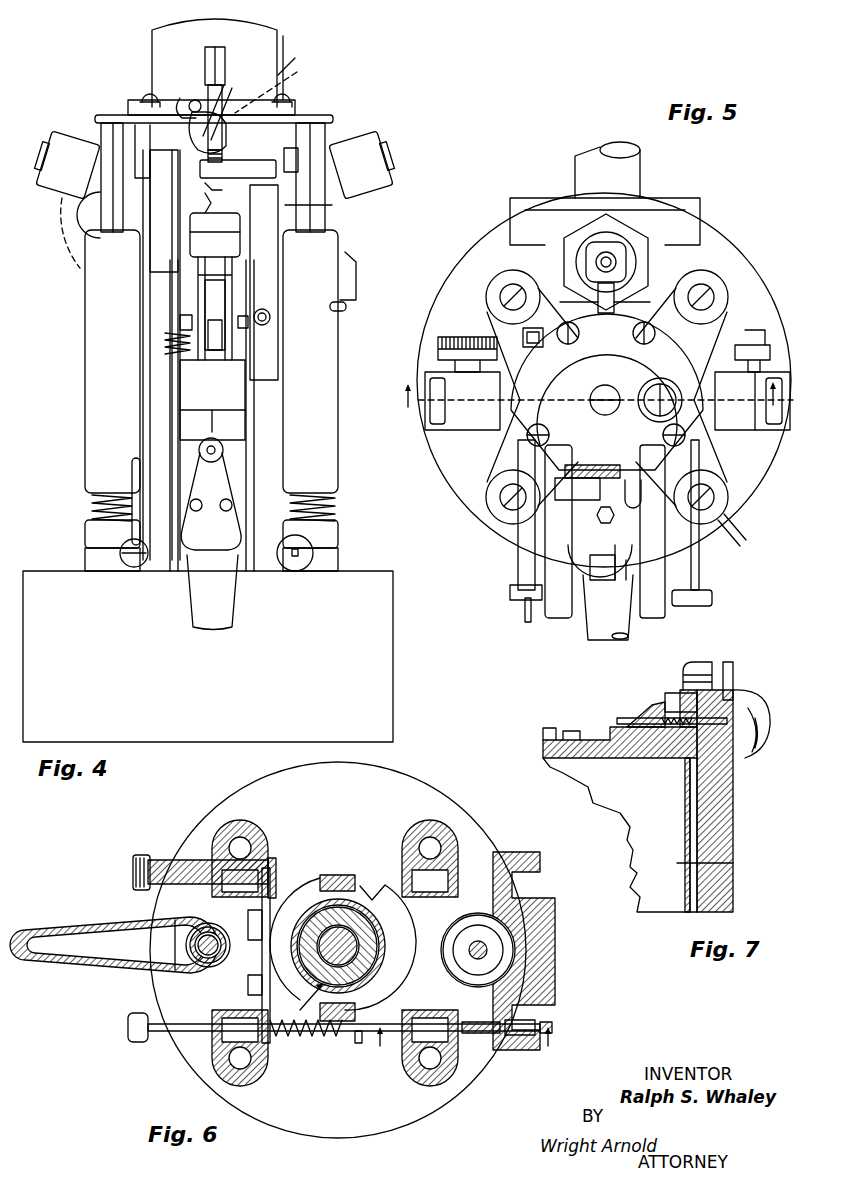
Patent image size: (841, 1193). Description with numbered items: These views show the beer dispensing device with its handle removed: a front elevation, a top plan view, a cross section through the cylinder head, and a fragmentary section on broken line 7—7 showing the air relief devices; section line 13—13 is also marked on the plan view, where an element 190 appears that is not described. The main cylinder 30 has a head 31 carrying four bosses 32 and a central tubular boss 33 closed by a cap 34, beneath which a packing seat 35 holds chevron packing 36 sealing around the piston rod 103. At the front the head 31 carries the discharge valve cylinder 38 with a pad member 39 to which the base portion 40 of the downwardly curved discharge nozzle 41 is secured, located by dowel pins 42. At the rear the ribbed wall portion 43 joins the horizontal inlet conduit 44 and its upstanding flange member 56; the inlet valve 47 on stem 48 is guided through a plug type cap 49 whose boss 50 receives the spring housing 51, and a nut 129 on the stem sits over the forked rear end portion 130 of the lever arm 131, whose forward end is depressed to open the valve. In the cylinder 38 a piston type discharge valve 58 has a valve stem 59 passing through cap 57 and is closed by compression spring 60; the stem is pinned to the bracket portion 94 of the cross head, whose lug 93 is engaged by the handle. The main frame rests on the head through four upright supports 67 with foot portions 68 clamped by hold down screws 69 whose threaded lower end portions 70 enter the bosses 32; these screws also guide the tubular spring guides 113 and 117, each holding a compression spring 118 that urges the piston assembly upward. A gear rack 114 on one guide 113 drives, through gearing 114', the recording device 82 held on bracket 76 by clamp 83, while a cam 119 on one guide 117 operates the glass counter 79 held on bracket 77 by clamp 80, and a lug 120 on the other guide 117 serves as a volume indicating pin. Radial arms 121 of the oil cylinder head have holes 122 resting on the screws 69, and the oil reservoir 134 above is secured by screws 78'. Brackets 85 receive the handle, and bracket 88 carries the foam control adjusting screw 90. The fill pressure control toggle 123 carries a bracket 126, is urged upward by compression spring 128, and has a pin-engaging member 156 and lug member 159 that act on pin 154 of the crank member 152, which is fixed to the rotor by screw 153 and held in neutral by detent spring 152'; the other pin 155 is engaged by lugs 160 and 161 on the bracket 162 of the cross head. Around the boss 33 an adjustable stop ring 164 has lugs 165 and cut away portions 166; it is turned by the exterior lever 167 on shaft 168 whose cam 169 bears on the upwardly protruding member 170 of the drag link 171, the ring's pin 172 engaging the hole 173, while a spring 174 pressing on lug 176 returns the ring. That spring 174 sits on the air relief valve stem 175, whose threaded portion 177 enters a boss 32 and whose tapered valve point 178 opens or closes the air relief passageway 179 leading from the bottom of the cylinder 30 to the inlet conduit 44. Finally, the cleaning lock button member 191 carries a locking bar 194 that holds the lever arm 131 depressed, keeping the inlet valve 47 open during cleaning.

In FIG. 6, the section line 7- 7 is at (463, 1046).
In FIG. 5, the section line 13- 13 is at (595, 383).
In FIG. 4, the base 30 is at (383, 676).
In FIG. 7, the base 30 is at (733, 864).
In FIG. 4, the frame plate 31 is at (376, 571).
In FIG. 5, the frame plate 31 is at (534, 240).
In FIG. 6, the frame plate 31 is at (346, 1138).
In FIG. 7, the frame plate 31 is at (628, 760).
In FIG. 4, the mounting lug 32 is at (86, 562).
In FIG. 6, the mounting lug 32 is at (242, 820).
In FIG. 6, the bushing 33 is at (370, 940).
In FIG. 7, the bushing 33 is at (598, 740).
In FIG. 6, the bearing 34 is at (376, 950).
In FIG. 7, the screw 35 is at (584, 738).
In FIG. 6, the hub 36 is at (352, 920).
In FIG. 4, the frame 38 is at (240, 452).
In FIG. 6, the pivot pin 39 is at (175, 920).
In FIG. 4, the lever 40 is at (228, 478).
In FIG. 5, the lever 40 is at (626, 582).
In FIG. 4, the handle 41 is at (232, 607).
In FIG. 5, the handle 41 is at (612, 640).
In FIG. 6, the handle 41 is at (74, 970).
In FIG. 4, the pins 42 is at (224, 511).
In FIG. 7, the wall 43 is at (724, 836).
In FIG. 5, the housing 44 is at (640, 166).
In FIG. 6, the housing 44 is at (548, 934).
In FIG. 7, the housing 44 is at (752, 722).
In FIG. 6, the bearing 47 is at (490, 956).
In FIG. 5, the shaft 48 is at (624, 260).
In FIG. 6, the shaft 48 is at (488, 950).
In FIG. 5, the nut 49 is at (608, 222).
In FIG. 7, the bracket 50 is at (700, 668).
In FIG. 5, the washer 51 is at (620, 238).
In FIG. 7, the pin 56 is at (734, 672).
In FIG. 4, the block 57 is at (236, 406).
In FIG. 5, the block 57 is at (600, 580).
In FIG. 6, the pin 58 is at (192, 954).
In FIG. 5, the lever arm 59 is at (596, 548).
In FIG. 6, the lever arm 59 is at (160, 946).
In FIG. 6, the bushing 60 is at (190, 940).
In FIG. 4, the plate 67 is at (165, 391).
In FIG. 5, the plate 67 is at (605, 302).
In FIG. 4, the base block 68 is at (86, 534).
In FIG. 5, the base block 68 is at (540, 290).
In FIG. 4, the post 69 is at (114, 233).
In FIG. 5, the post 69 is at (488, 300).
In FIG. 6, the bolt hole 70 is at (252, 842).
In FIG. 4, the bar 76 is at (332, 205).
In FIG. 4, the arm 77 is at (130, 186).
In FIG. 4, the screw 78' is at (221, 85).
In FIG. 5, the screw 78' is at (612, 436).
In FIG. 4, the contact block 79 is at (362, 140).
In FIG. 4, the terminal 80 is at (303, 159).
In FIG. 4, the contact block 82 is at (58, 140).
In FIG. 4, the bracket 83 is at (138, 132).
In FIG. 4, the guide 85 is at (160, 260).
In FIG. 5, the guide 85 is at (640, 608).
In FIG. 4, the cross bar 88 is at (240, 172).
In FIG. 4, the rod 90 is at (205, 68).
In FIG. 5, the rod 90 is at (615, 515).
In FIG. 4, the stem 93 is at (215, 297).
In FIG. 4, the plunger 94 is at (204, 320).
In FIG. 5, the plunger 94 is at (546, 554).
In FIG. 6, the shaft 103 is at (340, 940).
In FIG. 4, the cover 113 is at (86, 421).
In FIG. 5, the cover 113 is at (486, 305).
In FIG. 5, the block 114 is at (557, 352).
In FIG. 4, the block position 114' is at (59, 249).
In FIG. 4, the cover 117 is at (326, 366).
In FIG. 5, the cover 117 is at (735, 310).
In FIG. 4, the spring 118 is at (90, 506).
In FIG. 4, the bracket 119 is at (350, 258).
In FIG. 5, the bracket 119 is at (748, 332).
In FIG. 4, the pin 120 is at (340, 311).
In FIG. 5, the pin 120 is at (738, 545).
In FIG. 4, the plate 121 is at (96, 117).
In FIG. 5, the plate 121 is at (500, 318).
In FIG. 5, the screw 122 is at (504, 286).
In FIG. 4, the rod 123 is at (174, 290).
In FIG. 5, the rod 123 is at (500, 505).
In FIG. 4, the collar 126 is at (180, 322).
In FIG. 4, the spring 128 is at (165, 348).
In FIG. 5, the ring 129 is at (640, 258).
In FIG. 5, the ring 130 is at (626, 244).
In FIG. 5, the stem 131 is at (612, 290).
In FIG. 4, the cap 134 is at (266, 44).
In FIG. 5, the cap 134 is at (606, 348).
In FIG. 4, the cam 152 is at (229, 117).
In FIG. 5, the cam 152 is at (609, 460).
In FIG. 4, the cam 152' is at (284, 85).
In FIG. 5, the cam 152' is at (654, 494).
In FIG. 4, the slot 153 is at (303, 57).
In FIG. 4, the lever 154 is at (225, 88).
In FIG. 5, the lever 154 is at (590, 480).
In FIG. 4, the nut 155 is at (214, 165).
In FIG. 5, the nut 155 is at (578, 478).
In FIG. 4, the pin 156 is at (190, 100).
In FIG. 5, the pin 156 is at (566, 465).
In FIG. 4, the hook 159 is at (188, 112).
In FIG. 4, the block 160 is at (217, 235).
In FIG. 4, the spring 161 is at (225, 199).
In FIG. 4, the line 162 is at (240, 232).
In FIG. 6, the ring 164 is at (312, 884).
In FIG. 6, the spring 165 is at (335, 875).
In FIG. 6, the pawl 166 is at (356, 884).
In FIG. 4, the pin 167 is at (132, 470).
In FIG. 5, the pin 167 is at (525, 614).
In FIG. 6, the pin 167 is at (133, 862).
In FIG. 5, the shaft 168 is at (518, 578).
In FIG. 6, the shaft 168 is at (165, 860).
In FIG. 6, the arc 169 is at (292, 842).
In FIG. 6, the collar 170 is at (272, 862).
In FIG. 6, the slot 171 is at (257, 922).
In FIG. 6, the slot 172 is at (257, 984).
In FIG. 6, the plate 173 is at (270, 926).
In FIG. 6, the spring 174 is at (322, 1038).
In FIG. 4, the bolt 175 is at (296, 571).
In FIG. 5, the bolt 175 is at (712, 594).
In FIG. 6, the bolt 175 is at (150, 1042).
In FIG. 6, the pin 176 is at (358, 1044).
In FIG. 6, the nut 177 is at (478, 1022).
In FIG. 6, the nut 178 is at (516, 1036).
In FIG. 6, the tube 179 is at (530, 1027).
In FIG. 7, the tube 179 is at (704, 778).
In FIG. 5, the screw 190 is at (656, 420).
In FIG. 4, the roller 191 is at (270, 318).
In FIG. 4, the stop 194 is at (248, 318).